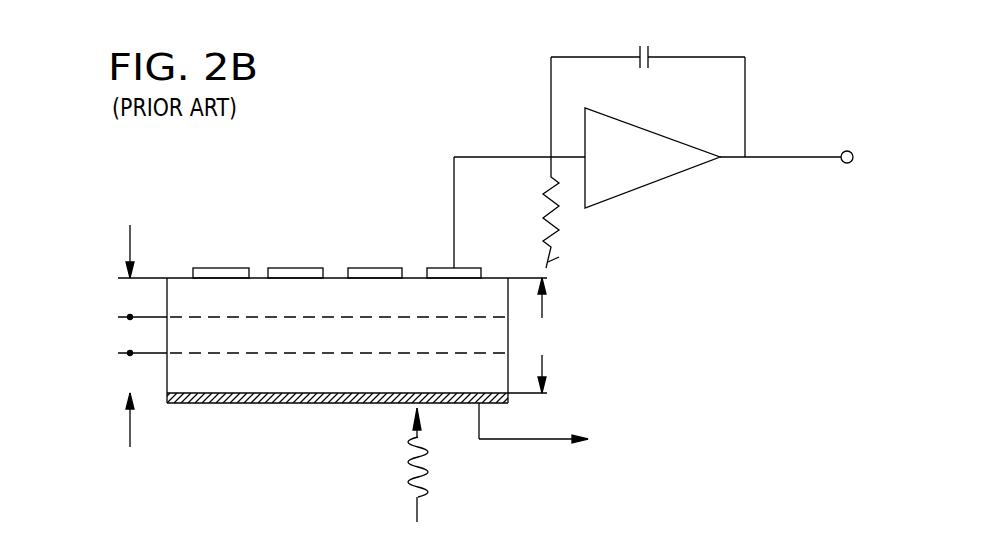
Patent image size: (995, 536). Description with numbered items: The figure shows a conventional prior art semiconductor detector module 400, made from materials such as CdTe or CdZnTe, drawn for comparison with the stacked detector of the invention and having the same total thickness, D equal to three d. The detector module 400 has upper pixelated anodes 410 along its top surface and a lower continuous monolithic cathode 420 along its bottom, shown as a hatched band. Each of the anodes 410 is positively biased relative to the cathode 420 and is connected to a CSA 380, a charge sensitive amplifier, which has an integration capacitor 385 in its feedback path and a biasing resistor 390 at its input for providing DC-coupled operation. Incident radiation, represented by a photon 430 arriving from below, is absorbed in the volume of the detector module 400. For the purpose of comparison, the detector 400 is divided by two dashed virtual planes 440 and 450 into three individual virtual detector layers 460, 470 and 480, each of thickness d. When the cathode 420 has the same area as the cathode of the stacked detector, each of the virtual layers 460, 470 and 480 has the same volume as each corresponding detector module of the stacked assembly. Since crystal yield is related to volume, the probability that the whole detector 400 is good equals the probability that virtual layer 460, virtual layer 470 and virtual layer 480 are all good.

The semiconductor detector module 400 is at (82, 267).
The pixelated anodes 410 is at (438, 268).
The continuous monolithic cathode 420 is at (293, 404).
The photon 430 is at (437, 459).
The virtual plane 440 is at (318, 354).
The virtual plane 450 is at (318, 318).
The virtual detector layer 460 is at (178, 285).
The virtual detector layer 470 is at (247, 333).
The virtual detector layer 480 is at (200, 378).
The CSA 380 is at (635, 182).
The integration capacitor 385 is at (648, 42).
The biasing resistor 390 is at (565, 210).